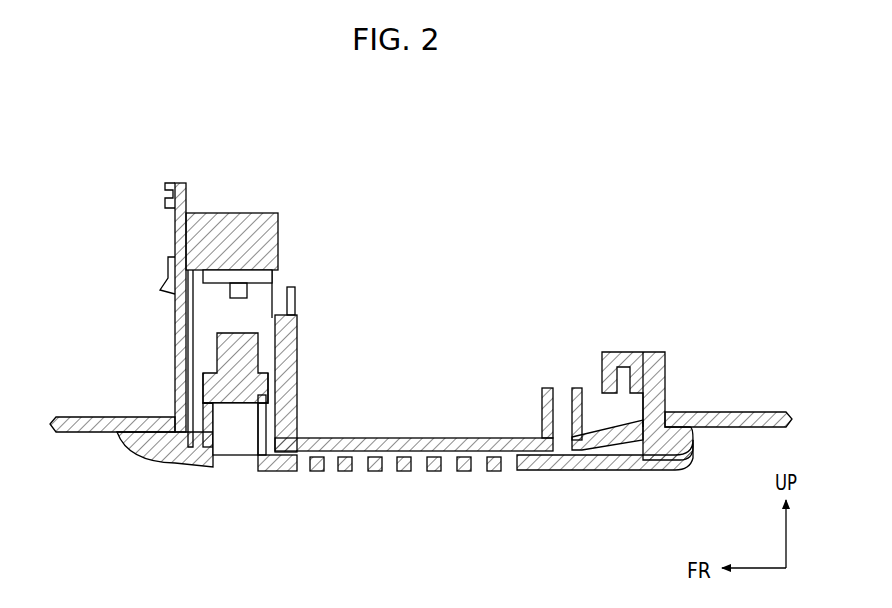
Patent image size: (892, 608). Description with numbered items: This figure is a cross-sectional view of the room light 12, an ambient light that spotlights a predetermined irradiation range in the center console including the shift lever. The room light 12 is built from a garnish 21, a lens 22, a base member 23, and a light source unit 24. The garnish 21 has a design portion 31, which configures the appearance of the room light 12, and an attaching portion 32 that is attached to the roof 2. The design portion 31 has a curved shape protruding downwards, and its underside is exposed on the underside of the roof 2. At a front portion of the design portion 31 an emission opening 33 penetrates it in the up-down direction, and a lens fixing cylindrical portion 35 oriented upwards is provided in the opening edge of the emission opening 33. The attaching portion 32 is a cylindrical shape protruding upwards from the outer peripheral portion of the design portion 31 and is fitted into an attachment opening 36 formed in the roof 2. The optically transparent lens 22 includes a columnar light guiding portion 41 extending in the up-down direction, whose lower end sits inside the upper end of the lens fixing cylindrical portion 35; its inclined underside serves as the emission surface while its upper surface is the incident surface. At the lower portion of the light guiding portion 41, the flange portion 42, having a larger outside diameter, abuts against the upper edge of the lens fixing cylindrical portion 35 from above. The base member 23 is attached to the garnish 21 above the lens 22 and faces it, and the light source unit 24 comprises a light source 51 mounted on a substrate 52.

The roof 2 is at (70, 436).
The room light 12 is at (158, 192).
The garnish 21 is at (163, 460).
The lens 22 is at (244, 406).
The base member 23 is at (267, 205).
The light source unit 24 is at (208, 290).
The design portion 31 is at (599, 468).
The attaching portion 32 is at (668, 363).
The emission opening 33 is at (260, 465).
The lens fixing cylindrical portion 35 is at (190, 462).
The attachment opening 36 is at (640, 437).
The light guiding portion 41 is at (216, 348).
The flange portion 42 is at (205, 392).
The light source 51 is at (220, 283).
The substrate 52 is at (233, 272).